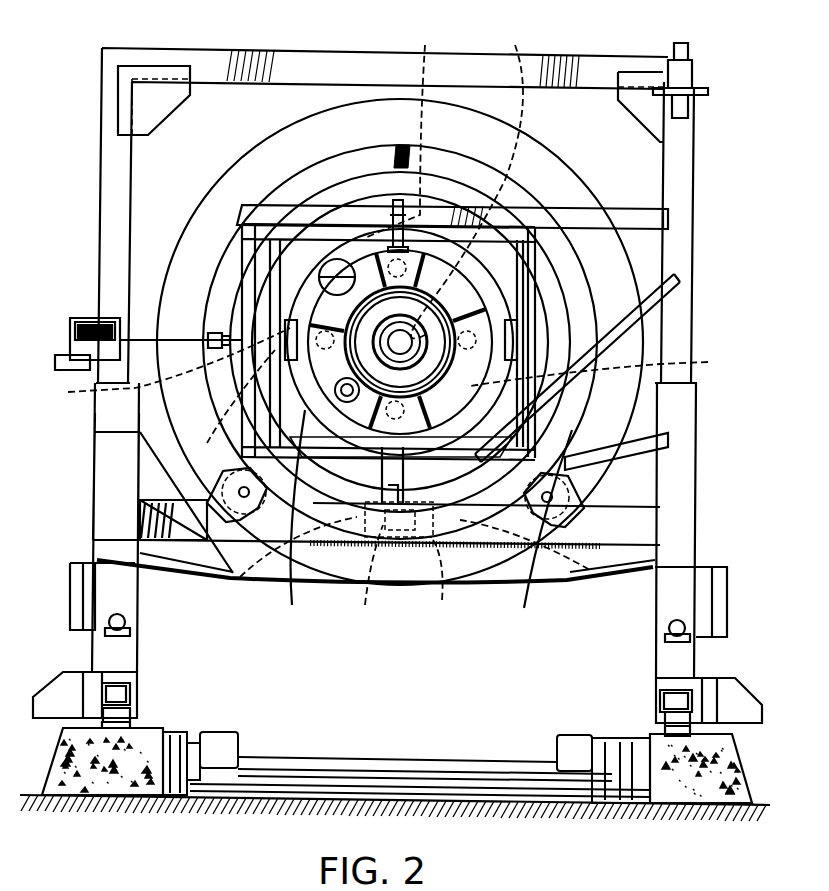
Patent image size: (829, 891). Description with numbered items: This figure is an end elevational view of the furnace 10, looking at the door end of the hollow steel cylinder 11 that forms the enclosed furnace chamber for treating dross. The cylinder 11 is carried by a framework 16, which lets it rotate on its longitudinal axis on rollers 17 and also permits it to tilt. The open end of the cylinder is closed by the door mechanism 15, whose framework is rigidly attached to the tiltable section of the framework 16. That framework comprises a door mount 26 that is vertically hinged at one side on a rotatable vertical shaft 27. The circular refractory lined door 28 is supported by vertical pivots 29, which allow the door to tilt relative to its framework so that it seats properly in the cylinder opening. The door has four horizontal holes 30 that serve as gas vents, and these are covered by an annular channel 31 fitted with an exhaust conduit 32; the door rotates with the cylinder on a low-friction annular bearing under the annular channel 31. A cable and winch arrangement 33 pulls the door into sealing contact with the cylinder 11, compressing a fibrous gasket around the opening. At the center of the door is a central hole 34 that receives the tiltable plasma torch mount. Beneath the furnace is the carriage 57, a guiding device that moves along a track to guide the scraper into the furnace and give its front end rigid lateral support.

The furnace 10 is at (92, 199).
The hollow steel cylinder 11 is at (562, 165).
The door mechanism 15 is at (232, 278).
The framework 16 is at (704, 159).
The rollers 17 is at (246, 498).
The door mount 26 is at (610, 206).
The rotatable vertical shaft 27 is at (680, 336).
The refractory lined door 28 is at (462, 290).
The vertical pivots 29 is at (405, 321).
The horizontal holes 30 is at (389, 327).
The annular channel 31 is at (363, 222).
The exhaust conduit 32 is at (345, 398).
The cable and winch arrangement 33 is at (88, 318).
The central hole 34 is at (403, 341).
The carriage 57 is at (572, 734).